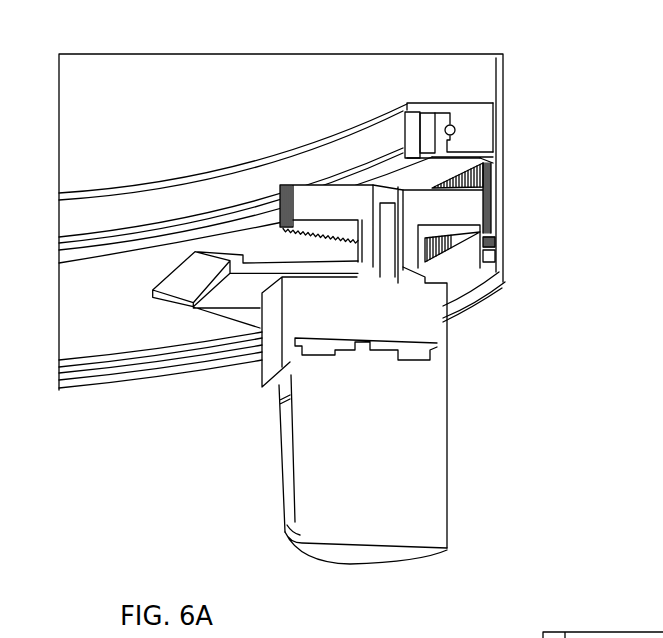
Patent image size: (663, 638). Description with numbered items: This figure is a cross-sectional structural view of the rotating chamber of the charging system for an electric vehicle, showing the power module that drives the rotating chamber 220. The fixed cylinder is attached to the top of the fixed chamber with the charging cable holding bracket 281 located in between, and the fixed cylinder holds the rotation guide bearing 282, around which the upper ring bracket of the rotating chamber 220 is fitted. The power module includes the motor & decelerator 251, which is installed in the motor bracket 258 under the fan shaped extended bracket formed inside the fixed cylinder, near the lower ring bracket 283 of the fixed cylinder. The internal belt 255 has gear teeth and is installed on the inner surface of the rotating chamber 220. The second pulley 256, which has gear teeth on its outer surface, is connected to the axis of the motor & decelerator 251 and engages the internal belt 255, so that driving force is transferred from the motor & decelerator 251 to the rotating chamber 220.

The rotating chamber 220 is at (503, 218).
The motor & decelerator 251 is at (440, 448).
The internal belt 255 is at (492, 173).
The second pulley 256 is at (472, 207).
The motor bracket 258 is at (223, 298).
The charging cable holding bracket 281 is at (465, 110).
The rotation guide bearing 282 is at (485, 128).
The lower ring bracket 283 is at (410, 177).